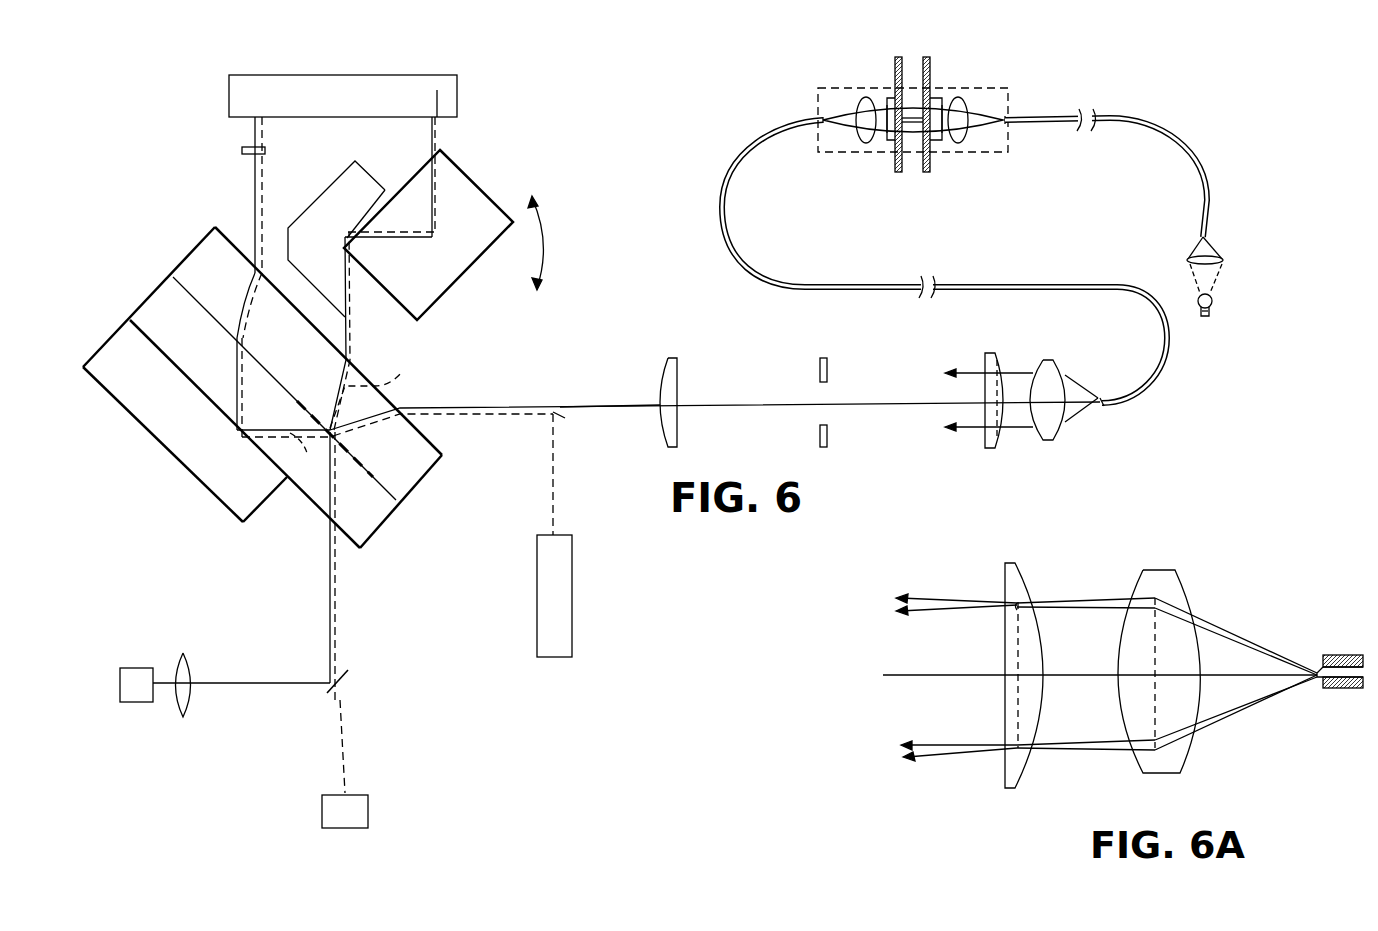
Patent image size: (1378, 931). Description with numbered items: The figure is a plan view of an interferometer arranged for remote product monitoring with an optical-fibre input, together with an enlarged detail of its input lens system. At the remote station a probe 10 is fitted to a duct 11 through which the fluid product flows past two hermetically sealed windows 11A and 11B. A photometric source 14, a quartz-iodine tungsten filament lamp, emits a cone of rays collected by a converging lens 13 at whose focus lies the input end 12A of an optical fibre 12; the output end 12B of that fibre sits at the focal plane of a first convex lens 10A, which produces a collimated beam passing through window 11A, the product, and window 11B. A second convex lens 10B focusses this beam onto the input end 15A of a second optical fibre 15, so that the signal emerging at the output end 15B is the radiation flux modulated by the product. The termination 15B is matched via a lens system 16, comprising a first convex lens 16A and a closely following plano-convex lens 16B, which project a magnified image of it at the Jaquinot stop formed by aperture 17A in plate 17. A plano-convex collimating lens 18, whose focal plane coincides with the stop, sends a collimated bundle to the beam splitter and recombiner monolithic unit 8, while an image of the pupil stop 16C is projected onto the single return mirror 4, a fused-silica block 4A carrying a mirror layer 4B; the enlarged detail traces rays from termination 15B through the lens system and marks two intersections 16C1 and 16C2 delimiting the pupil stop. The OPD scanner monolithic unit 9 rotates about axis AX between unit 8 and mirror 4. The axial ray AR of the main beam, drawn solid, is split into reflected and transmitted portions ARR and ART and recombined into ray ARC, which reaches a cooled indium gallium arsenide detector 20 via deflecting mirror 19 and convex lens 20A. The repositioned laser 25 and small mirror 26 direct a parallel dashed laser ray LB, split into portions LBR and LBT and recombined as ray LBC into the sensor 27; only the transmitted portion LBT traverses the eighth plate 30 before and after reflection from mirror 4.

In FIG. 6, the single return mirror 4 is at (210, 102).
In FIG. 6, the fused-silica parallelepipedal block 4A is at (437, 90).
In FIG. 6, the mirror layer 4B is at (238, 118).
In FIG. 6, the ⅛ plate 30 is at (265, 150).
In FIG. 6, the beam splitter and recombiner monolithic unit 8 is at (148, 276).
In FIG. 6, the OPD scanner monolithic unit 9 is at (470, 290).
In FIG. 6, the axis of rotation AX is at (391, 234).
In FIG. 6, the transmitted ray portion of main interferometer beam ART is at (237, 370).
In FIG. 6, the reflected ray portion of main interferometer beam ARR is at (333, 393).
In FIG. 6, the reflected portion of laser beam axial ray LBR is at (378, 387).
In FIG. 6, the transmitted portion of laser beam axial ray LBT is at (305, 455).
In FIG. 6, the laser beam axial ray LB is at (512, 413).
In FIG. 6, the axial ray of main interferometer beam AR is at (627, 408).
In FIG. 6, the recombined ray of main interferometer beam ARC is at (332, 620).
In FIG. 6, the recombined laser ray LBC is at (340, 650).
In FIG. 6, the plane mirror 26 is at (548, 398).
In FIG. 6, the laser 25 is at (538, 637).
In FIG. 6, the detector 20 is at (140, 672).
In FIG. 6, the convex lens 20A is at (187, 697).
In FIG. 6, the deflecting mirror 19 is at (347, 690).
In FIG. 6, the sensor 27 is at (322, 813).
In FIG. 6, the plano-convex collimating lens 18 is at (667, 368).
In FIG. 6, the plate 17 is at (818, 370).
In FIG. 6, the aperture 17A is at (820, 413).
In FIG. 6, the lens system 16 is at (1006, 437).
In FIG. 6A, the lens system 16 is at (1106, 691).
In FIG. 6, the first convex lens 16A is at (1052, 432).
In FIG. 6A, the first convex lens 16A is at (1168, 763).
In FIG. 6, the plano-convex lens 16B is at (992, 433).
In FIG. 6A, the plano-convex lens 16B is at (1015, 778).
In FIG. 6, the pupil stop 16C is at (985, 393).
In FIG. 6A, the pupil stop 16C is at (1008, 663).
In FIG. 6A, the intersection delimiting pupil stop 16C1 is at (1015, 615).
In FIG. 6A, the intersection delimiting pupil stop 16C2 is at (1015, 740).
In FIG. 6, the second optical fibre 15 is at (718, 218).
In FIG. 6A, the second optical fibre 15 is at (1340, 655).
In FIG. 6, the input end of second optical fibre 15A is at (822, 122).
In FIG. 6, the output end of second optical fibre 15B is at (1100, 397).
In FIG. 6A, the output end of second optical fibre 15B is at (1318, 667).
In FIG. 6, the probe 10 is at (1010, 100).
In FIG. 6, the first convex lens 10A is at (966, 135).
In FIG. 6, the second convex lens 10B is at (858, 135).
In FIG. 6, the duct 11 is at (895, 58).
In FIG. 6, the hermetically sealed window 11A is at (933, 118).
In FIG. 6, the hermetically sealed window 11B is at (888, 117).
In FIG. 6, the optical fibre 12 is at (1183, 142).
In FIG. 6, the input end of optical fibre 12A is at (1203, 236).
In FIG. 6, the output end of optical fibre 12B is at (1005, 124).
In FIG. 6, the converging lens 13 is at (1188, 262).
In FIG. 6, the photometric source 14 is at (1210, 317).